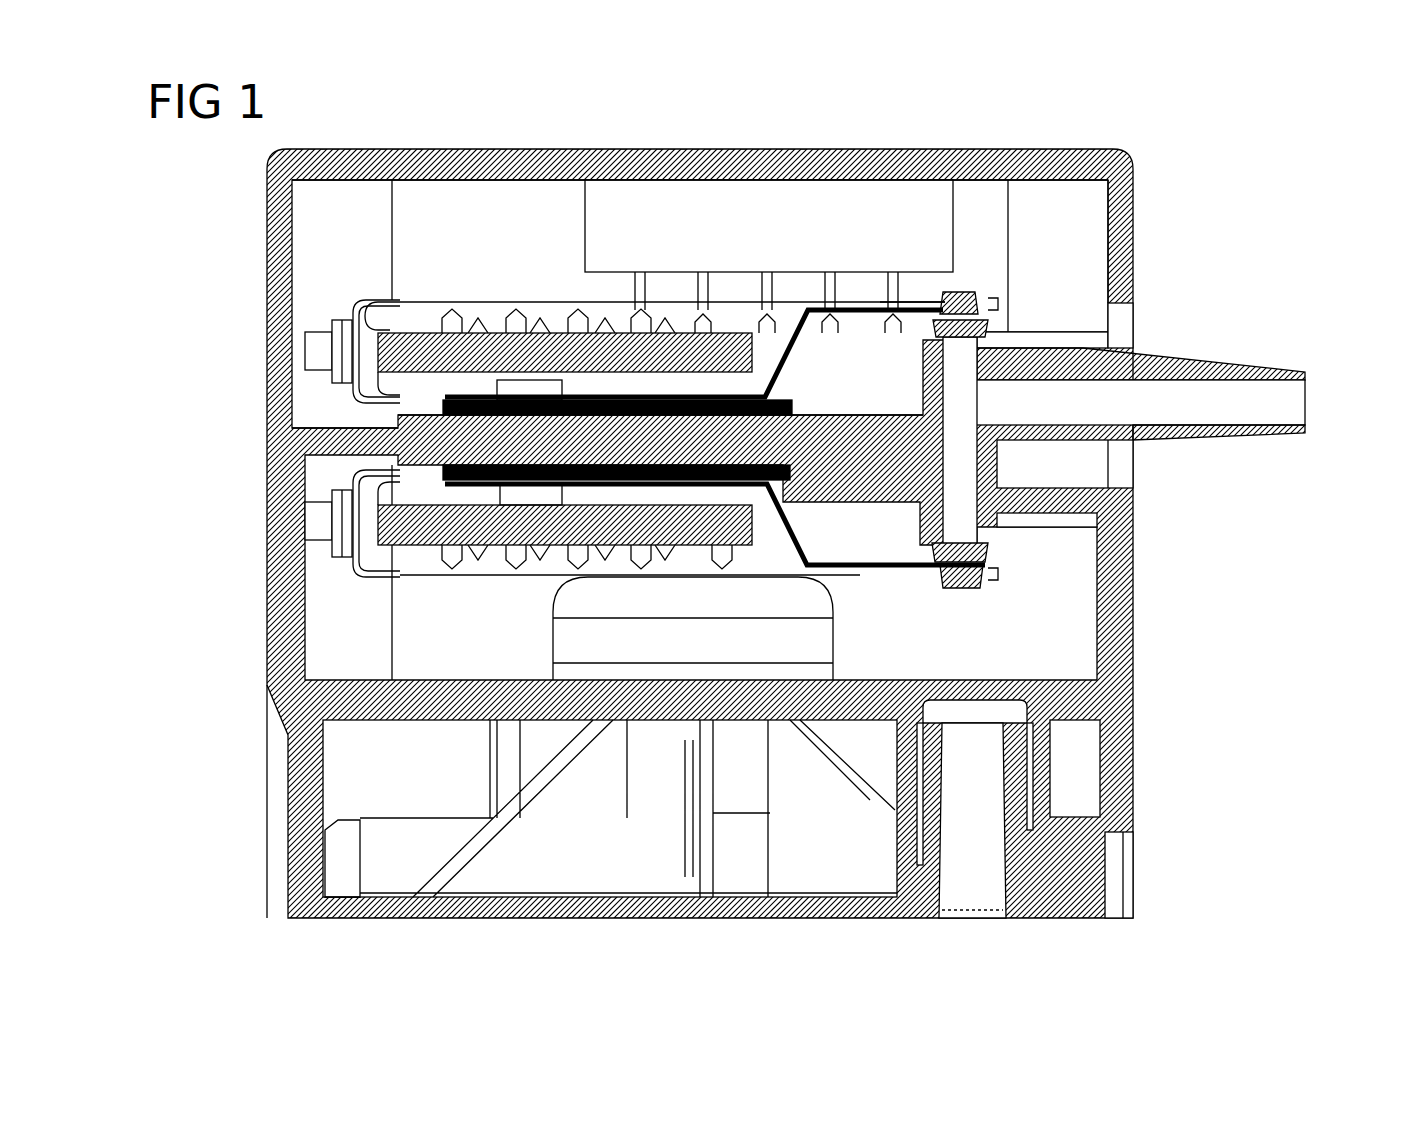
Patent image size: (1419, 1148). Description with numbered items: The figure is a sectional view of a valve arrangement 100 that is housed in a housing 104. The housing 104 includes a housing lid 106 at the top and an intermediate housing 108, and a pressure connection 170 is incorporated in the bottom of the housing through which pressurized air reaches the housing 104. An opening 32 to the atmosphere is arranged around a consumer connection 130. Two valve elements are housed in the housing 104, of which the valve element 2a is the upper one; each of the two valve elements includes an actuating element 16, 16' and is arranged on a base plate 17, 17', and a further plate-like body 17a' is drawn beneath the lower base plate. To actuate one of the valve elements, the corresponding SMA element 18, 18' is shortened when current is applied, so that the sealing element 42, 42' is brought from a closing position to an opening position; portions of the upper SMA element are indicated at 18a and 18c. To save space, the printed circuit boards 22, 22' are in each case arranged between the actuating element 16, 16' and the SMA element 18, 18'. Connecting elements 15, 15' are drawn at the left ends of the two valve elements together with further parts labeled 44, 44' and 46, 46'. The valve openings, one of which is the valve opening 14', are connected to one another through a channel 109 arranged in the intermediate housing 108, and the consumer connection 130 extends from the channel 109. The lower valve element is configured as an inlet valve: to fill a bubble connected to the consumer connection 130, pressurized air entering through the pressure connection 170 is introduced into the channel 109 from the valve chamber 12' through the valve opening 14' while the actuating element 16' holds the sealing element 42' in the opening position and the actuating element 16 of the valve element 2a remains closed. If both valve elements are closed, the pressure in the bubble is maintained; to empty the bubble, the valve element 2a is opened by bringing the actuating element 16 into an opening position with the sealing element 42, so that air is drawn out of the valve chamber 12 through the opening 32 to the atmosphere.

The valve arrangement 100 is at (1147, 143).
The valve chamber 12 is at (747, 304).
The valve chamber 12' is at (755, 567).
The valve element 2a is at (990, 256).
The housing lid 106 is at (757, 157).
The housing 104 is at (1120, 272).
The opening to the atmosphere 32 is at (1120, 328).
The consumer connection 130 is at (1265, 398).
The channel 109 is at (965, 465).
The intermediate housing 108 is at (312, 463).
The valve opening 14' is at (1005, 456).
The sealing element 42 is at (959, 213).
The sealing element 42' is at (999, 582).
The printed circuit board 22 is at (554, 376).
The printed circuit board 22' is at (565, 561).
The base plate 17 is at (655, 418).
The base plate 17' is at (659, 462).
The heat sink body 17a' is at (693, 621).
The actuating element 16 is at (694, 353).
The actuating element 16' is at (715, 563).
The SMA element 18 is at (672, 265).
The SMA element 18' is at (630, 610).
The substrate end loop 18a is at (385, 298).
The substrate connection portion 18c is at (907, 300).
The connecting element 15 is at (304, 315).
The connecting element 15' is at (304, 562).
The spring portion 44 is at (302, 332).
The second spring portion 44' is at (302, 548).
The fastener 46 is at (278, 351).
The second fastener 46' is at (278, 523).
The pressure connection 170 is at (975, 690).